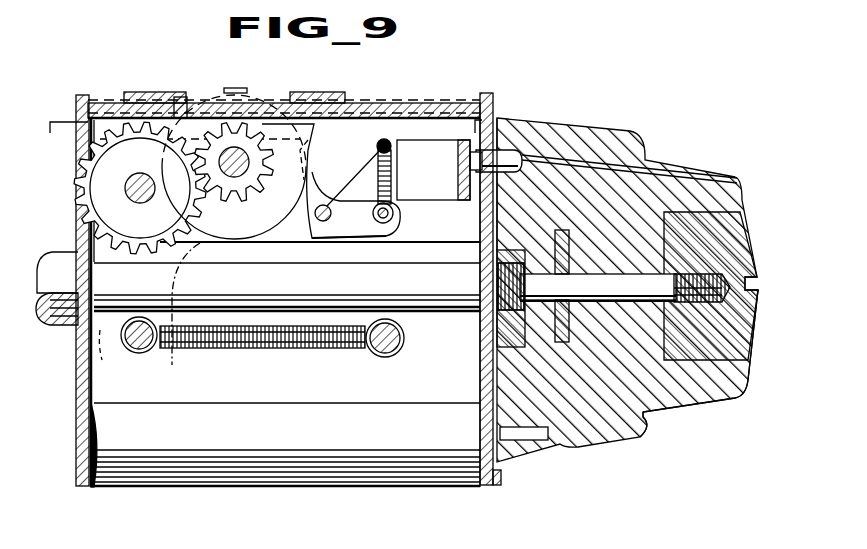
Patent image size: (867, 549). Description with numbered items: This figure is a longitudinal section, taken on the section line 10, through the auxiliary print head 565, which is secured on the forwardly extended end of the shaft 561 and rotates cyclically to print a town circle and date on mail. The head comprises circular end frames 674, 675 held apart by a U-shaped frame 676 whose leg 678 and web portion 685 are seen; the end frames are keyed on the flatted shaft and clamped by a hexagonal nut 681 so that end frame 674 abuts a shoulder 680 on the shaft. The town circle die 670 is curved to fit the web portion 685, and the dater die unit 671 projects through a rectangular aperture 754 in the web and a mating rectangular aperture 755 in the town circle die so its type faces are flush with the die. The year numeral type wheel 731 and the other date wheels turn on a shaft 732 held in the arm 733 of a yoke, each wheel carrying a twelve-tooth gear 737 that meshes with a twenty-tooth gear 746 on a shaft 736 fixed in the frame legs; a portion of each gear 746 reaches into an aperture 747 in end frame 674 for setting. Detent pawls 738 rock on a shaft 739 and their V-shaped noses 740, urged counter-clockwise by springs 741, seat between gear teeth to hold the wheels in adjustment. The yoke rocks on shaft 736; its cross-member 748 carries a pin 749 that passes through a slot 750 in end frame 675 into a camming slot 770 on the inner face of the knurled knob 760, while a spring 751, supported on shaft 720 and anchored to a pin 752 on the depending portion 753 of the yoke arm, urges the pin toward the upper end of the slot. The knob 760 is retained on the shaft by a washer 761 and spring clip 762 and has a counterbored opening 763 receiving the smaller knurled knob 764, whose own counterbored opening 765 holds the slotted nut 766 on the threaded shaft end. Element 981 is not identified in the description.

The section line 10 is at (259, 137).
The shaft 561 is at (60, 268).
The auxiliary print head 565 is at (456, 87).
The town circle die 670 is at (336, 94).
The dater die unit 671 is at (254, 88).
The end frame 674 is at (84, 403).
The end frame 675 is at (500, 480).
The U-shaped frame 676 is at (471, 95).
The leg 678 is at (458, 364).
The shoulder 680 is at (78, 325).
The hexagonal nut 681 is at (508, 326).
The web portion 685 is at (424, 106).
The shaft 720 is at (378, 352).
The year numeral type wheel 731 is at (232, 242).
The shaft 732 is at (234, 167).
The arm 733 is at (394, 214).
The shaft 736 is at (146, 202).
The twelve-tooth gear 737 is at (248, 198).
The detent pawl 738 is at (326, 226).
The shaft 739 is at (348, 184).
The V-shaped nose 740 is at (308, 144).
The spring 741 is at (393, 176).
The twenty-tooth gear 746 is at (92, 186).
The aperture 747 is at (80, 150).
The cross-member 748 is at (462, 184).
The pin 749 is at (486, 158).
The slot 750 is at (486, 212).
The spring 751 is at (272, 350).
The pin 752 is at (150, 348).
The depending portion 753 is at (102, 364).
The rectangular aperture 754 is at (178, 104).
The rectangular aperture 755 is at (188, 104).
The knurled knob 760 is at (575, 447).
The washer 761 is at (642, 256).
The spring clip 762 is at (573, 258).
The counterbored opening 763 is at (636, 418).
The knurled knob 764 is at (698, 404).
The counterbored opening 765 is at (741, 363).
The nut 766 is at (738, 226).
The camming slot 770 is at (512, 156).
The bottom wall 981 is at (426, 466).